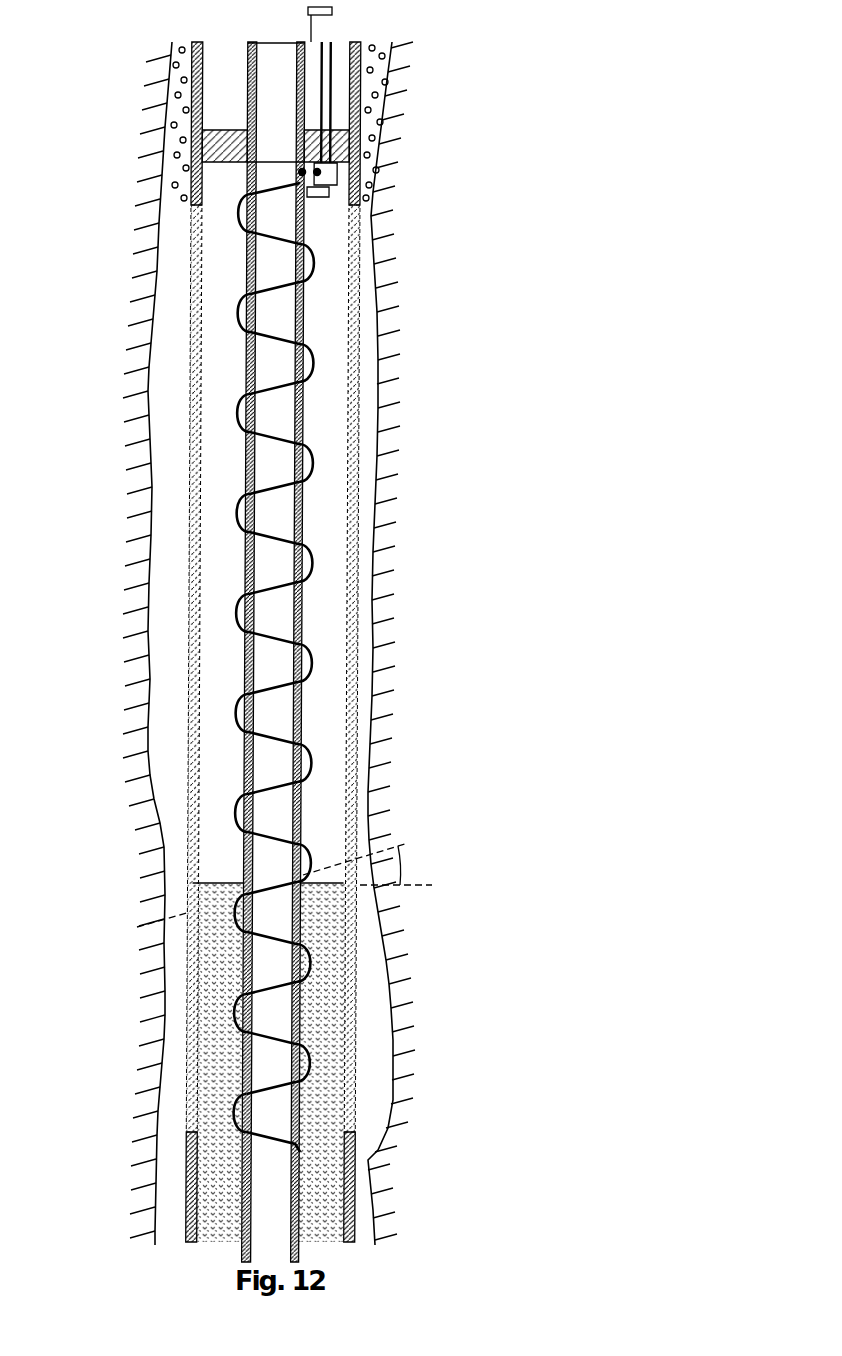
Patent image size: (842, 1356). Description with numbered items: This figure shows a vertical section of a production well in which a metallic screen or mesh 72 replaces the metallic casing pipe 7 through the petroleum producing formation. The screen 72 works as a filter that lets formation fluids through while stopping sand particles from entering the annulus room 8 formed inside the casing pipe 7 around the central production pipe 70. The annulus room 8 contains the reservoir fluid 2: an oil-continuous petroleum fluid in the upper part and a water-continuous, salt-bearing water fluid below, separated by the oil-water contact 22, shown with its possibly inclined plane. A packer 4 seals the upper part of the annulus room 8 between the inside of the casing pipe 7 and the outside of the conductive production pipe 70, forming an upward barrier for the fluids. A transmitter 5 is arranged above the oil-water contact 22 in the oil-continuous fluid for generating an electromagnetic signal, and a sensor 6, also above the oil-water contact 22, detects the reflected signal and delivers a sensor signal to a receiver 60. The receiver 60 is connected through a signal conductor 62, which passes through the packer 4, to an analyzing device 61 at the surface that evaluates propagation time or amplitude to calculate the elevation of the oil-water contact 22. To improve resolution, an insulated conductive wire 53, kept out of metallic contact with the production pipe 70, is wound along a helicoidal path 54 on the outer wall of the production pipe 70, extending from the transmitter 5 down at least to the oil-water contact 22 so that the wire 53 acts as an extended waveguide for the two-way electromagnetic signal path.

The fluid 2 is at (227, 358).
The packer 4 is at (192, 127).
The transmitter 5 is at (380, 143).
The sensor 6 is at (470, 220).
The casing pipe 7 is at (192, 184).
The annulus room 8 is at (210, 247).
The oil-water contact 22 is at (198, 880).
The conductive wire 53 is at (313, 463).
The helicoidal path 54 is at (266, 1123).
The receiver 60 is at (322, 180).
The analyzing device 61 is at (332, 12).
The signal conductor 62 is at (312, 122).
The central production pipe 70 is at (305, 328).
The metallic screen 72 is at (192, 500).